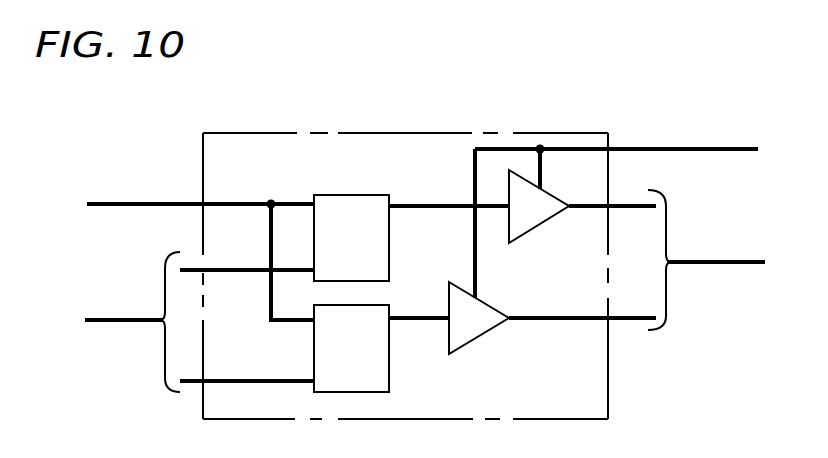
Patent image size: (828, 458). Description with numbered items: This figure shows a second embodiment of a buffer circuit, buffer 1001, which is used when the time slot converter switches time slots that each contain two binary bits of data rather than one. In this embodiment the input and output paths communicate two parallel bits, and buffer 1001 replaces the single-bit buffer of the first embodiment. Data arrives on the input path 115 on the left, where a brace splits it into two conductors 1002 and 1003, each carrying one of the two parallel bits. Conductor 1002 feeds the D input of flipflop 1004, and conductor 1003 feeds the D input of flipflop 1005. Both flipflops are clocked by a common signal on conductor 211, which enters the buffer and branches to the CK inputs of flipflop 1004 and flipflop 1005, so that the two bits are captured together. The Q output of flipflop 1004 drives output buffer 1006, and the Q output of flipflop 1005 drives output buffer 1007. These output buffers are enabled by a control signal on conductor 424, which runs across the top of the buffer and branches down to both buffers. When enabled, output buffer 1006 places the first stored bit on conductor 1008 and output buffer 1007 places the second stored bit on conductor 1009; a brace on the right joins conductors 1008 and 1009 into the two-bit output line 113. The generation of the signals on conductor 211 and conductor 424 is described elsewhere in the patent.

The buffer 1001 is at (272, 133).
The conductor 211 is at (144, 203).
The data path 115 is at (132, 318).
The conductor 424 is at (687, 148).
The output line 113 is at (695, 262).
The conductor 1002 is at (238, 272).
The conductor 1003 is at (268, 378).
The flipflop 1004 is at (343, 195).
The flipflop 1005 is at (389, 360).
The output buffer 1006 is at (584, 182).
The output buffer 1007 is at (492, 302).
The conductor 1008 is at (597, 208).
The conductor 1009 is at (571, 320).